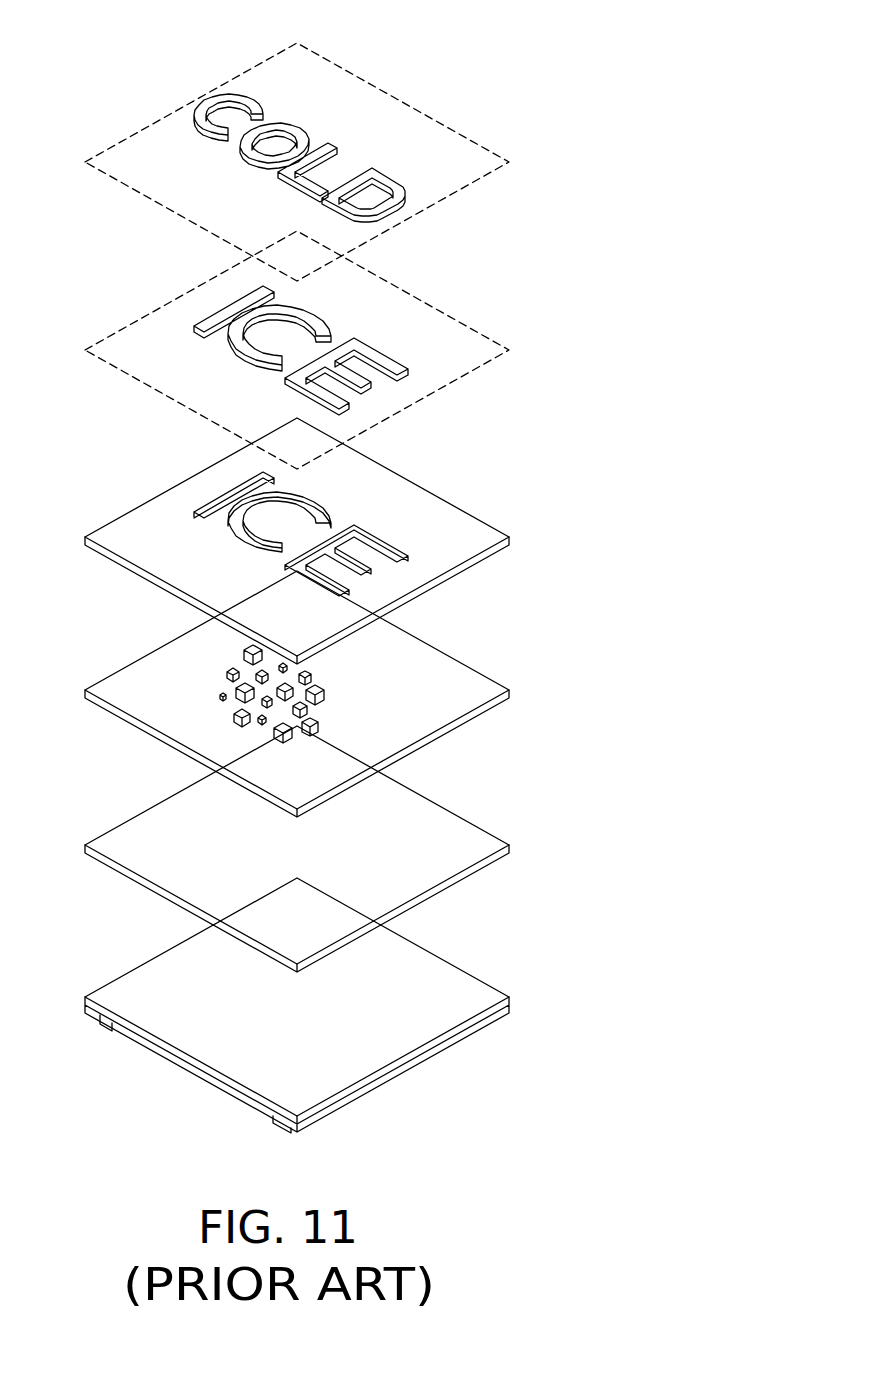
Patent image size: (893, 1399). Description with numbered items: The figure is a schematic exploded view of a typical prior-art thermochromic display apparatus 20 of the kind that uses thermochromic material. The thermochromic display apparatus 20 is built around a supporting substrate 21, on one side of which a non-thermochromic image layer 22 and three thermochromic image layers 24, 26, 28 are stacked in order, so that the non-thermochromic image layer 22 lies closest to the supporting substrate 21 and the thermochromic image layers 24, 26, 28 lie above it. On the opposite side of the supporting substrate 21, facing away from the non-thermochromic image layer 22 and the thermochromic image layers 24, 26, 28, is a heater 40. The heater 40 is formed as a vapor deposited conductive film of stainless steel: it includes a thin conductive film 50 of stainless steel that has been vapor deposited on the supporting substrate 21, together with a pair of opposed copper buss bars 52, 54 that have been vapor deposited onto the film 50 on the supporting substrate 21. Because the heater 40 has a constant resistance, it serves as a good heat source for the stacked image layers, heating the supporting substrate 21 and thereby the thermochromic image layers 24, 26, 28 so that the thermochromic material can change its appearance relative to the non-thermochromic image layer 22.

The thermochromic display apparatus 20 is at (281, 27).
The thermochromic image layer 28 is at (473, 160).
The thermochromic image layer 26 is at (473, 350).
The thermochromic image layer 24 is at (473, 535).
The non-thermochromic image layer 22 is at (473, 687).
The supporting substrate 21 is at (473, 843).
The heater 40 is at (441, 933).
The thin conductive film 50 is at (463, 988).
The buss bar 52 is at (100, 1022).
The buss bar 54 is at (288, 1124).